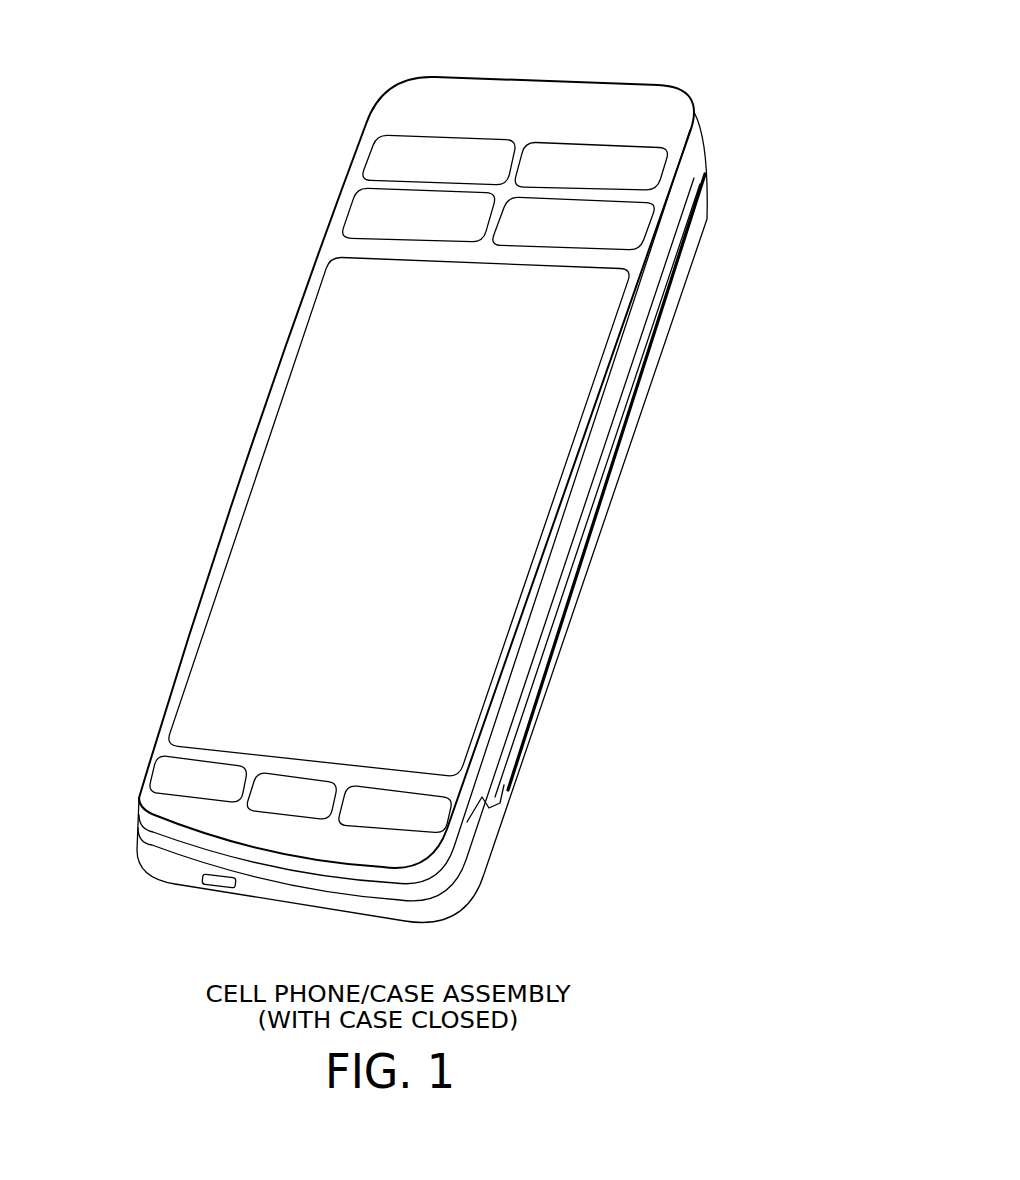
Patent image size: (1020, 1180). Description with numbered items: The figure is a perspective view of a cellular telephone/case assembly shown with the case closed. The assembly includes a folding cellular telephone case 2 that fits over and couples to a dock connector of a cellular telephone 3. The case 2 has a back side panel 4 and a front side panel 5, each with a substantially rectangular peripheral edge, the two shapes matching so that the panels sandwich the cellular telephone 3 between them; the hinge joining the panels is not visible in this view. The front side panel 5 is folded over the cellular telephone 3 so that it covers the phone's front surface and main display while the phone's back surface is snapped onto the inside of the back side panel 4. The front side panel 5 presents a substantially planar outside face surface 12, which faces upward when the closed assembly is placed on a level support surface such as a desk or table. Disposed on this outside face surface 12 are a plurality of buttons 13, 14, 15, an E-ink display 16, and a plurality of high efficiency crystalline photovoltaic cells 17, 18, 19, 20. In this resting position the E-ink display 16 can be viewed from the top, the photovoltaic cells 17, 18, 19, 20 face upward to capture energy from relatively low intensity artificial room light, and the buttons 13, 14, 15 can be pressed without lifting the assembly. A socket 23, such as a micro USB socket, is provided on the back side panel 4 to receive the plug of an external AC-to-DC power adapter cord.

The folding cellular telephone case 2 is at (381, 509).
The cellular telephone 3 is at (505, 760).
The back side panel 4 is at (305, 922).
The front side panel 5 is at (400, 480).
The outside face surface 12 is at (204, 584).
The button 13 is at (198, 779).
The button 14 is at (291, 796).
The button 15 is at (395, 809).
The E-ink display 16 is at (399, 516).
The high efficiency crystalline photovoltaic cell 17 is at (439, 159).
The high efficiency crystalline photovoltaic cell 18 is at (591, 165).
The high efficiency crystalline photovoltaic cell 19 is at (419, 214).
The high efficiency crystalline photovoltaic cell 20 is at (573, 223).
The socket 23 is at (213, 884).